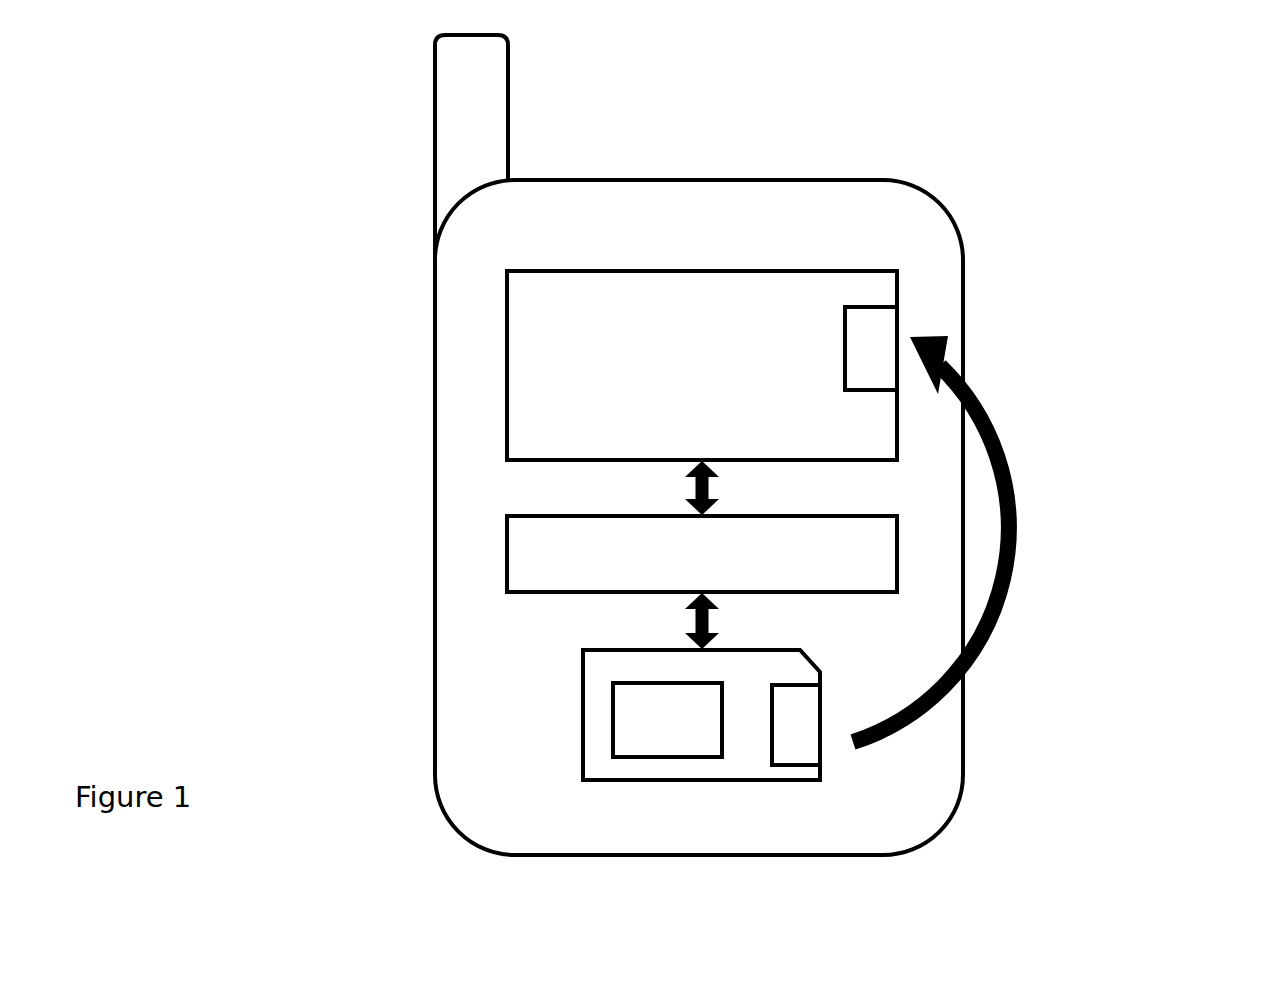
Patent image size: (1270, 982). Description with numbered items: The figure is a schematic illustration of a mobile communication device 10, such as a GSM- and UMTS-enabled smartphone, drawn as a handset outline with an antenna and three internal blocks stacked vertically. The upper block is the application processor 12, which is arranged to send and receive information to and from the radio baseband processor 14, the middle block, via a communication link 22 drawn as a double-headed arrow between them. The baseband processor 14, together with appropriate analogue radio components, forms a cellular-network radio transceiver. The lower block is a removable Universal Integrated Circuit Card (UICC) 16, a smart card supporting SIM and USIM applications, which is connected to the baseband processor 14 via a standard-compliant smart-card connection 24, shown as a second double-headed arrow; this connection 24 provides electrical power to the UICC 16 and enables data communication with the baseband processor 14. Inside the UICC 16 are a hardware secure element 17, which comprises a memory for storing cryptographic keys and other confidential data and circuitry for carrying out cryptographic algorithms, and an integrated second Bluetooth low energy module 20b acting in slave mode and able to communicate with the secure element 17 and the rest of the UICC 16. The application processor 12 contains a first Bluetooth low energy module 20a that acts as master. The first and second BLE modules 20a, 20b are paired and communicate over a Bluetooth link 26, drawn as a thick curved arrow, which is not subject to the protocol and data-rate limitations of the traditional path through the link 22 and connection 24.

The mobile communication device 10 is at (975, 165).
The application processor 12 is at (535, 390).
The radio baseband processor 14 is at (535, 553).
The Universal Integrated Circuit Card (UICC) 16 is at (747, 755).
The hardware secure element 17 is at (640, 733).
The first Bluetooth low energy module 20a is at (873, 348).
The second Bluetooth low energy module 20b is at (807, 755).
The communication link 22 is at (738, 488).
The ISO/IEC 7816 standard-compliant connection 24 is at (738, 618).
The Bluetooth link 26 is at (1022, 517).